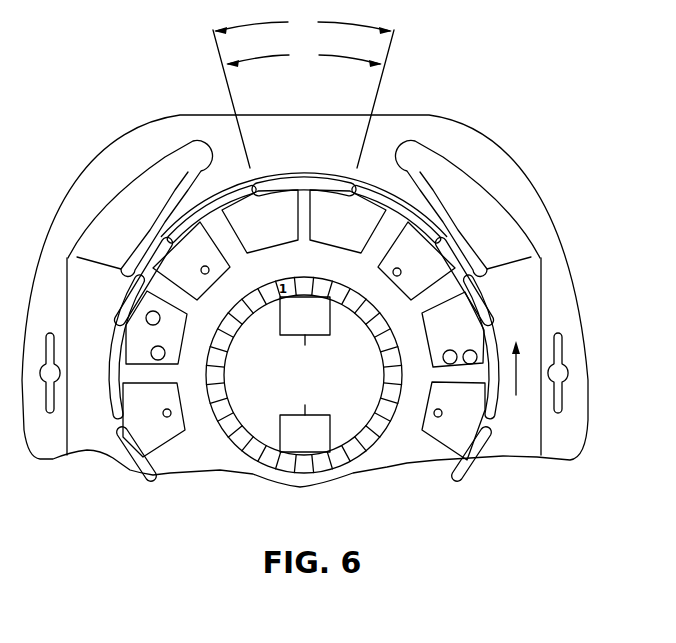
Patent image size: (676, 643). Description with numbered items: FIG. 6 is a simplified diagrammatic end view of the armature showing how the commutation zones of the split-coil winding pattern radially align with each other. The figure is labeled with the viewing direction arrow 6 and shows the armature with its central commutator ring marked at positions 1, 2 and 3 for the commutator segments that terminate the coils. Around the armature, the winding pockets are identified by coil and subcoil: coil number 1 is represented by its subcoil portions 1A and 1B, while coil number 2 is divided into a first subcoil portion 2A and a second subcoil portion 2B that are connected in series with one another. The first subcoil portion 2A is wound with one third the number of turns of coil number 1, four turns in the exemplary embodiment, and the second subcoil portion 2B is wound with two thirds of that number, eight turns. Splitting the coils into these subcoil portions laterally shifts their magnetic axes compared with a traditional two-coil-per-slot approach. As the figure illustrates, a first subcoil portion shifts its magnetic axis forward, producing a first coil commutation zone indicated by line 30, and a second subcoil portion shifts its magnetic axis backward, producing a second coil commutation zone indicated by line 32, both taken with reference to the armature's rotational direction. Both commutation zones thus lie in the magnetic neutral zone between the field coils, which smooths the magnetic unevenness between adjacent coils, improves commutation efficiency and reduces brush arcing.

The coil number 1 is at (305, 301).
The coil number 2 is at (305, 288).
The ring segment position 3 is at (327, 289).
The pocket 1A is at (289, 339).
The pocket 1B is at (304, 329).
The first subcoil portion 2A is at (304, 344).
The second subcoil portion 2B is at (319, 341).
The direction arrow 6 is at (513, 355).
The first coil commutation zone line 30 is at (304, 58).
The second coil commutation zone line 32 is at (303, 90).